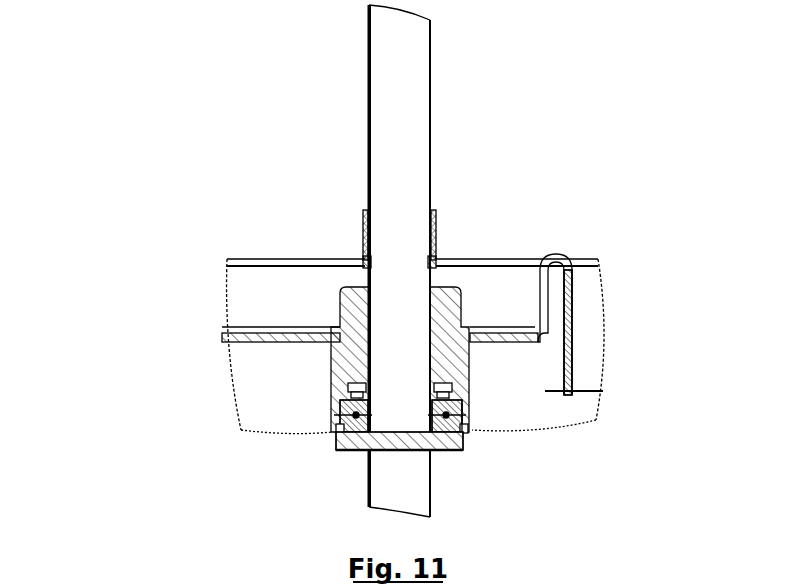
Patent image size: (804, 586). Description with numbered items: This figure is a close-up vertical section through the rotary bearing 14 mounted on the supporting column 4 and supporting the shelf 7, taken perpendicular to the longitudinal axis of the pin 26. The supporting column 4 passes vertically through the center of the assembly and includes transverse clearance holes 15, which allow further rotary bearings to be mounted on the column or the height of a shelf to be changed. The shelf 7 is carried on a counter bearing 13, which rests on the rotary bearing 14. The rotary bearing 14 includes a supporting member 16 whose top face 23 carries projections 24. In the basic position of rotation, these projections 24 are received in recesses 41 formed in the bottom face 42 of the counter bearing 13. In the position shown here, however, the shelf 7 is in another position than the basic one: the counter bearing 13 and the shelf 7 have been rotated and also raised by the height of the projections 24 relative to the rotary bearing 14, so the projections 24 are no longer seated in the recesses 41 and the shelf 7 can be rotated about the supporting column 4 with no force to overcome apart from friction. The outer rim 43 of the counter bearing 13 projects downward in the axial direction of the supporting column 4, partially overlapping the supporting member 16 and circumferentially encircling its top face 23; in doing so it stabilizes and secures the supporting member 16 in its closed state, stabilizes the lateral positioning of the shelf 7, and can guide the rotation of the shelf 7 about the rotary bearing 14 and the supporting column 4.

The supporting column 4 is at (368, 68).
The transverse clearance holes 15 is at (366, 138).
The shelf 7 is at (507, 262).
The counter bearing 13 is at (330, 404).
The recesses 41 is at (336, 415).
The projections 24 is at (336, 421).
The bottom face 42 is at (336, 425).
The outer rim 43 is at (337, 431).
The top face 23 is at (465, 435).
The supporting member 16 is at (463, 430).
The pin 26 is at (462, 444).
The rotary bearing 14 is at (465, 452).